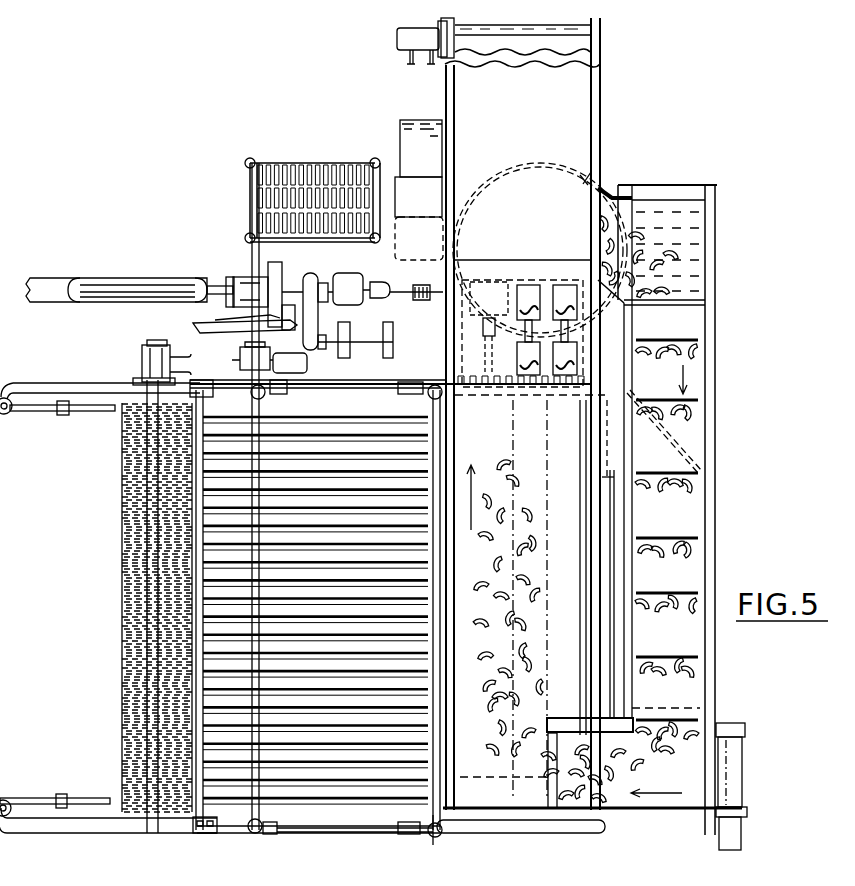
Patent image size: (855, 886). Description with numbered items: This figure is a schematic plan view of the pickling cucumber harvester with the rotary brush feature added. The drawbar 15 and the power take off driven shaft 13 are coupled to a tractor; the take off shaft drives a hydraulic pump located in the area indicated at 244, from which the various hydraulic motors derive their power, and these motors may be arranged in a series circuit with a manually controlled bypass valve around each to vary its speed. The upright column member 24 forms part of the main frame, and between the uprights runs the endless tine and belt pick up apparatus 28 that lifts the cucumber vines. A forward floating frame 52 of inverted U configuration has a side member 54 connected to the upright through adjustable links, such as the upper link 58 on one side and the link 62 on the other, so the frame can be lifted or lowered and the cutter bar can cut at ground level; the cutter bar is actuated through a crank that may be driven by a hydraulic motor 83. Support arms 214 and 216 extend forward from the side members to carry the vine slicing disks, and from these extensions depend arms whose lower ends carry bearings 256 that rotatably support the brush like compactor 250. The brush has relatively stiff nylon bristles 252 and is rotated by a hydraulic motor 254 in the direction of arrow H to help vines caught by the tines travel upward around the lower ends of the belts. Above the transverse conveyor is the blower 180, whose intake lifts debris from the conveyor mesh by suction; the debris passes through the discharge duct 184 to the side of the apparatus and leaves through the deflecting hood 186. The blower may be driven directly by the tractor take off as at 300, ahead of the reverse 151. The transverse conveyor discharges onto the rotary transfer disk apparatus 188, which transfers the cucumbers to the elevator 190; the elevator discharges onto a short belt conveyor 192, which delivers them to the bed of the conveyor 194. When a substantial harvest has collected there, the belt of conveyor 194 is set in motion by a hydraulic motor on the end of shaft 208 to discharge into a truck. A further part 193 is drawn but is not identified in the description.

The power take off driven shaft 13 is at (92, 290).
The drawbar 15 is at (142, 278).
The upright column member 24 is at (437, 840).
The endless tine and belt pick up apparatus 28 is at (378, 793).
The forward floating frame 52 is at (250, 805).
The side member 54 is at (256, 826).
The upper adjustable link 58 is at (322, 834).
The adjustable link 62 is at (353, 386).
The hydraulic motor 83 is at (233, 352).
The reverse 151 is at (347, 273).
The blower 180 is at (438, 356).
The discharge duct 184 is at (430, 190).
The deflecting hood 186 is at (430, 120).
The rotary transfer disk apparatus 188 is at (592, 162).
The elevator 190 is at (690, 440).
The short belt conveyor 192 is at (688, 778).
The support leg 193 is at (790, 850).
The conveyor 194 is at (473, 762).
The shaft 208 is at (397, 40).
The support arm 214 is at (90, 835).
The support arm 216 is at (95, 397).
The hydraulic pump 244 is at (253, 285).
The brush like compactor 250 is at (122, 525).
The nylon bristles 252 is at (122, 610).
The hydraulic motor 254 is at (140, 362).
The bearing 256 is at (133, 380).
The direct take off drive 300 is at (337, 248).